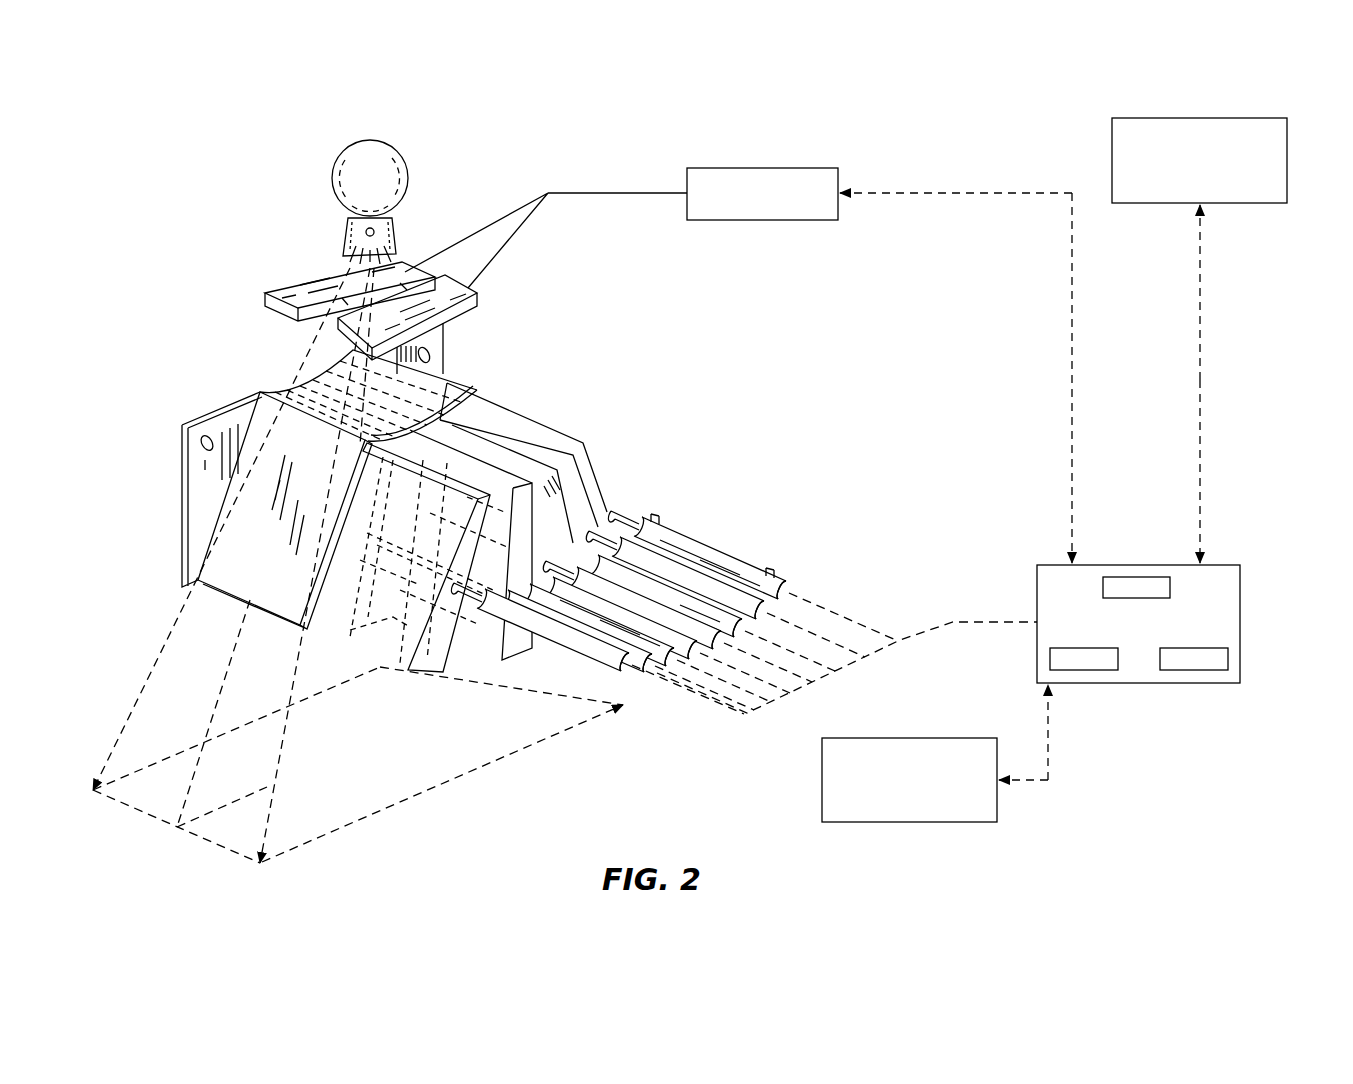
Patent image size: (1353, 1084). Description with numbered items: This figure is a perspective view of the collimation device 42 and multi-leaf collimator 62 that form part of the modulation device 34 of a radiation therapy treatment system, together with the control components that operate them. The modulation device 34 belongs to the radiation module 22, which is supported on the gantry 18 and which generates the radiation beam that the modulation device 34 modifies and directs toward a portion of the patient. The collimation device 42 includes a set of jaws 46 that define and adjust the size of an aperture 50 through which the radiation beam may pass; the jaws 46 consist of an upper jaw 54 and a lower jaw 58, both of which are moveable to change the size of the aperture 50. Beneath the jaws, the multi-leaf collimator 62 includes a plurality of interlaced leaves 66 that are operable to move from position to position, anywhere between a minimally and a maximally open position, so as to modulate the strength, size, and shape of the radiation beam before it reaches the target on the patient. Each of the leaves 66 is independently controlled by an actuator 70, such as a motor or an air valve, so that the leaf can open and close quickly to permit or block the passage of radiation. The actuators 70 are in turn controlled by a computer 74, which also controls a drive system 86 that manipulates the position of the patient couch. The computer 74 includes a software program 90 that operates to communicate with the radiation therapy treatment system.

The gantry 18 is at (1163, 118).
The radiation module 22 is at (353, 160).
The modulation device 34 is at (651, 326).
The collimation device 42 is at (533, 104).
The set of jaws 46 is at (269, 213).
The aperture 50 is at (330, 323).
The upper jaw 54 is at (283, 288).
The lower jaw 58 is at (410, 277).
The multi-leaf collimator 62 is at (474, 390).
The interlaced leaves 66 is at (598, 470).
The actuator 70 is at (722, 168).
The computer 74 is at (1242, 587).
The drive system 86 is at (925, 822).
The software program 90 is at (1185, 663).